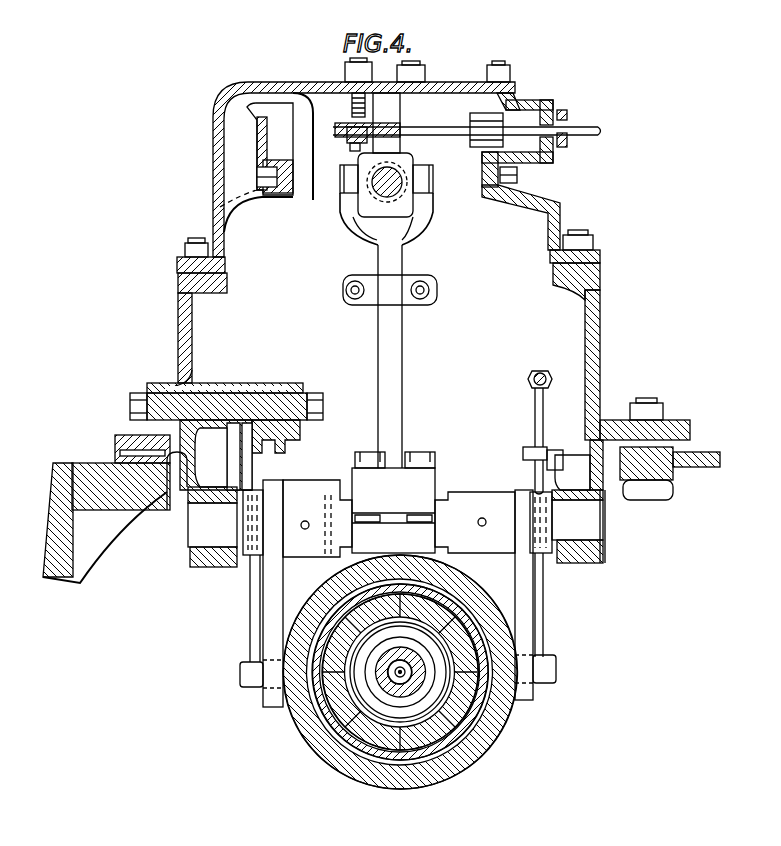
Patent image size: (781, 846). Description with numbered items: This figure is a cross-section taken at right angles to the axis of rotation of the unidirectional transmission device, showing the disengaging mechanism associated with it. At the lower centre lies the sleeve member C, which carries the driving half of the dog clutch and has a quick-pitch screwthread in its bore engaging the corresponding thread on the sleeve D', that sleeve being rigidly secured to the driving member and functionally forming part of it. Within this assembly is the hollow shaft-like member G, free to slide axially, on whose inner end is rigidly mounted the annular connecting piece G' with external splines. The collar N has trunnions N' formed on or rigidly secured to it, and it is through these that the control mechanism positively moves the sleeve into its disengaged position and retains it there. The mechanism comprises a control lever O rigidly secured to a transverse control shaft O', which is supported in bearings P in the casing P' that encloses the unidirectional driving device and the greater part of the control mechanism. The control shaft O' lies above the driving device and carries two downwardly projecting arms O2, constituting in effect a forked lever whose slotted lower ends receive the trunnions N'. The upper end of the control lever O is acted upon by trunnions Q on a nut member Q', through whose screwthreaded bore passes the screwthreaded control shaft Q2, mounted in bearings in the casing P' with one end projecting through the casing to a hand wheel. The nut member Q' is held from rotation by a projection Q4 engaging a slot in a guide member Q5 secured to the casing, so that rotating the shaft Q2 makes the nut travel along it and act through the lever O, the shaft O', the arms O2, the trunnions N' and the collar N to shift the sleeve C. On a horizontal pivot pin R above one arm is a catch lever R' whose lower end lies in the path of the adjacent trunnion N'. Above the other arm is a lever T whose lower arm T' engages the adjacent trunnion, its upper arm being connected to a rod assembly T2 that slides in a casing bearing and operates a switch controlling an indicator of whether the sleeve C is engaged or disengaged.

The guide member Q5 is at (427, 90).
The projection Q4 is at (383, 130).
The trunnions Q is at (385, 179).
The nut member Q' is at (376, 219).
The screwthreaded control shaft Q2 is at (400, 187).
The casing P' is at (585, 265).
The pivot pin R is at (226, 409).
The control lever O is at (390, 399).
The rod assembly T2 is at (543, 366).
The lever T is at (533, 441).
The transverse control shaft O' is at (457, 518).
The bearings P is at (399, 543).
The arms O2 is at (273, 600).
The catch lever R' is at (234, 576).
The trunnions N' is at (394, 671).
The lower arm T' is at (552, 574).
The collar N is at (408, 672).
The sleeve D' is at (412, 681).
The hollow shaft-like member G is at (403, 715).
The sleeve member C is at (374, 751).
The annular connecting piece G' is at (362, 701).